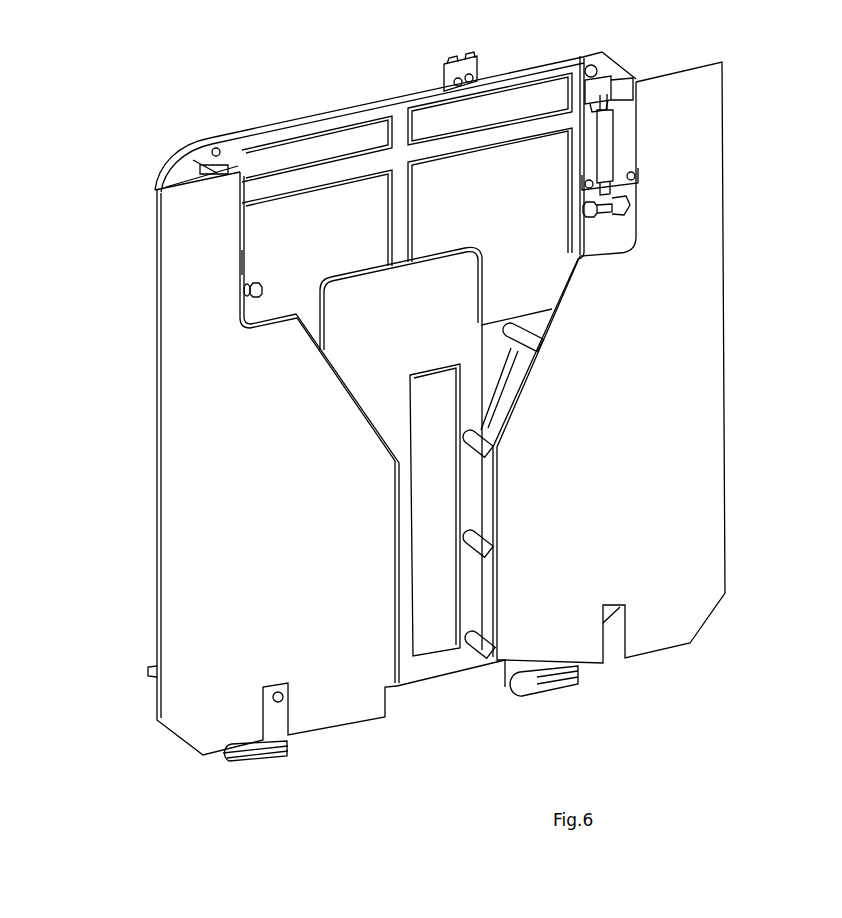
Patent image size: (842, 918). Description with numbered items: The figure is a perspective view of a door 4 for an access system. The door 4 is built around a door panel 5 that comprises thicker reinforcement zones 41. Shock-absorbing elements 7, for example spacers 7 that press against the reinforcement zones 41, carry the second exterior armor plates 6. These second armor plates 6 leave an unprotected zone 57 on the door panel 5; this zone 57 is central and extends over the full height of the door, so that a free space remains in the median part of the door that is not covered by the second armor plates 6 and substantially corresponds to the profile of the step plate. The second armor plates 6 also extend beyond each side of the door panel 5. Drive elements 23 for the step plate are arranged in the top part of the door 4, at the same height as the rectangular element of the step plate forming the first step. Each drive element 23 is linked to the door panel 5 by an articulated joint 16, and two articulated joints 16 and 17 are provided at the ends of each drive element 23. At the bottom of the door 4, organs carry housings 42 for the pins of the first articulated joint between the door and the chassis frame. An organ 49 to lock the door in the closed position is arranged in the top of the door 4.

The door 4 is at (106, 101).
The door panel 5 is at (170, 168).
The second exterior armor plates 6 is at (222, 516).
The shock-absorbing elements 7 is at (493, 442).
The articulated joint 16 is at (607, 80).
The articulated joint 17 is at (618, 208).
The drive elements 23 is at (607, 152).
The reinforcement zones 41 is at (395, 118).
The housings 42 is at (525, 693).
The organ to lock the door 49 is at (456, 60).
The unprotected zone 57 is at (400, 313).